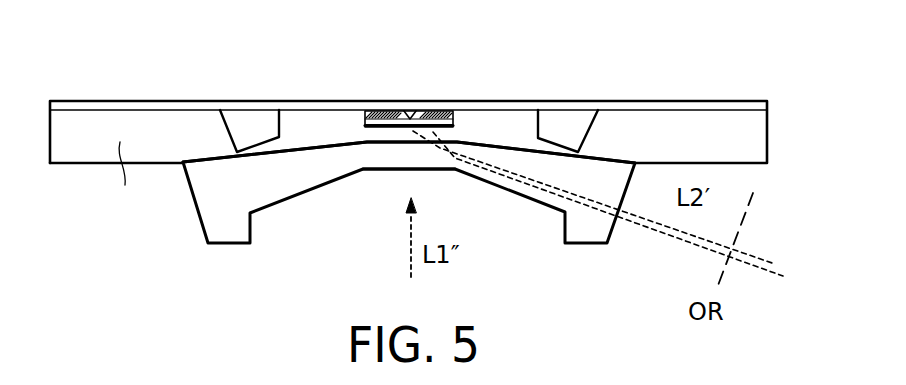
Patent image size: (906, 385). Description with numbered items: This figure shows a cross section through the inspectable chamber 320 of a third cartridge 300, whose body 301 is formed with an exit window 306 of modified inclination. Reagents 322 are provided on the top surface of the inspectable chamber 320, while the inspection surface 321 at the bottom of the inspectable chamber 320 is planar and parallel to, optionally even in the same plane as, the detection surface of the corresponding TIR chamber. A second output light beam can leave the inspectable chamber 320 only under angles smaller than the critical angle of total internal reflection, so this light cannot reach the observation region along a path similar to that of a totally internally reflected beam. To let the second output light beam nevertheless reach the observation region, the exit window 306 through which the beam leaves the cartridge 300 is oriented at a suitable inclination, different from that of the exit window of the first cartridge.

The third cartridge 300 is at (672, 82).
The body 301 is at (199, 185).
The exit window 306 is at (385, 145).
The inspectable chamber 320 is at (378, 110).
The inspection surface 321 is at (410, 112).
The reagents 322 is at (435, 110).